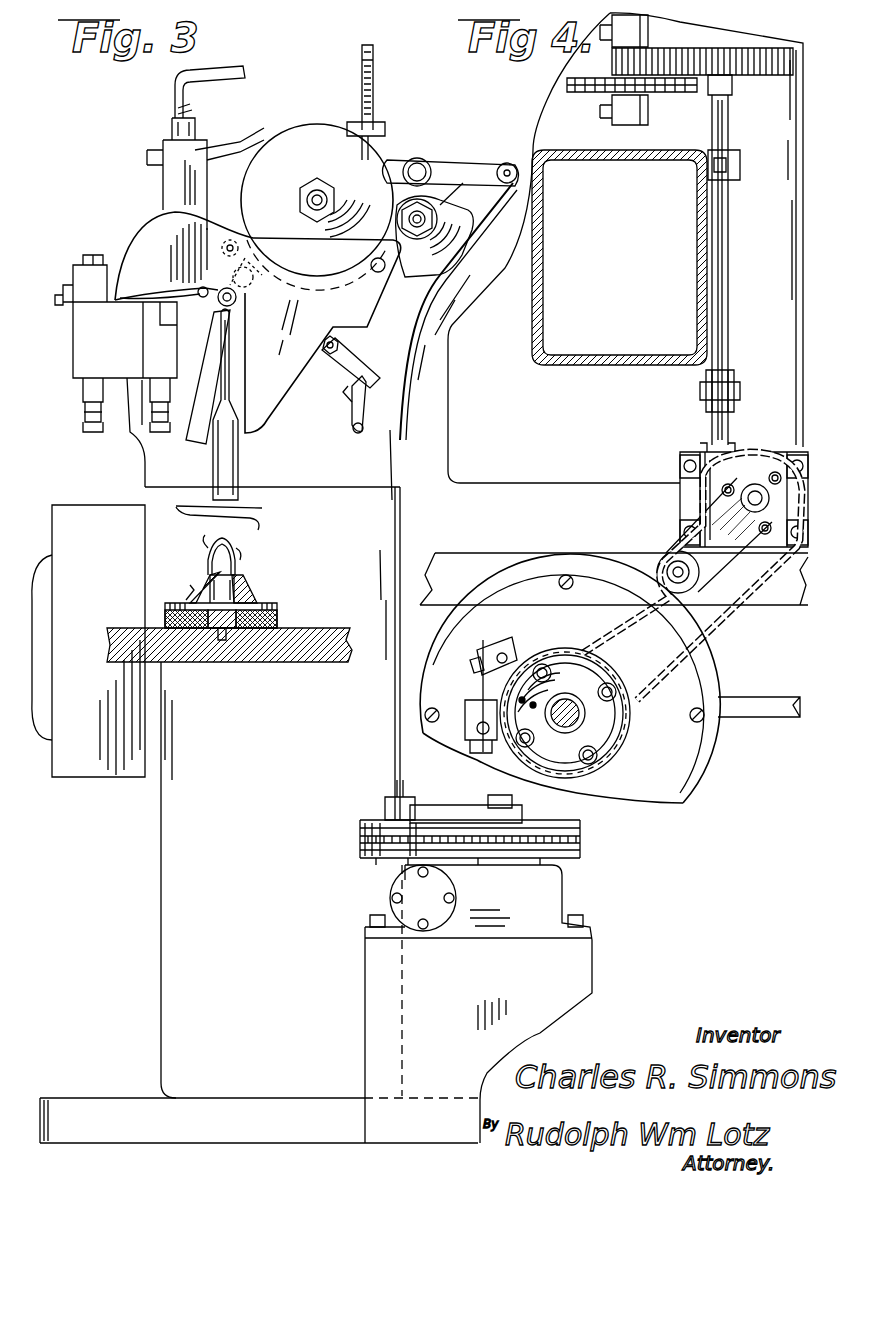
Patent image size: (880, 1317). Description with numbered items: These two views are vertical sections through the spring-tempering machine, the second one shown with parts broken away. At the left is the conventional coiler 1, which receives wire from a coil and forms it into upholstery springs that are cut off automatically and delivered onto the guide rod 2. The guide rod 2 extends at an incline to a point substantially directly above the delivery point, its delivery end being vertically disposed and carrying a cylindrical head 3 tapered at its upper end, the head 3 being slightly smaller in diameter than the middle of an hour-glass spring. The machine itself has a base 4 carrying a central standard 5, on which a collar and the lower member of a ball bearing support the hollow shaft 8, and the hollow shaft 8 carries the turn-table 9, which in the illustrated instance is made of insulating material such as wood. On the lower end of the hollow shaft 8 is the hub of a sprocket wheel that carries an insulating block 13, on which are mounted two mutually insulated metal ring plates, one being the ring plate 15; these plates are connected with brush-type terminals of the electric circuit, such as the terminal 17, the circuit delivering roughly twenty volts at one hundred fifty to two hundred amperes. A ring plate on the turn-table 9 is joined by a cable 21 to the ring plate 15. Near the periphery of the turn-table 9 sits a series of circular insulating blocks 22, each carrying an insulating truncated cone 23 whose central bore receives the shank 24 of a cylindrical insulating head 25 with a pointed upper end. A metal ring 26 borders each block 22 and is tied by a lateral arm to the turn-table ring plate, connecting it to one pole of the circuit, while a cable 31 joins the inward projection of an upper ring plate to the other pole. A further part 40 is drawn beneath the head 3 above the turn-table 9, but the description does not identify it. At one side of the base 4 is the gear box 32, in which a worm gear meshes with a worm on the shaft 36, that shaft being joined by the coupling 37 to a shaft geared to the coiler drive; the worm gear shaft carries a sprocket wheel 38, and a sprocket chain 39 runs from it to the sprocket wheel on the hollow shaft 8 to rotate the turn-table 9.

In FIG. 3, the coiler 1 is at (155, 440).
In FIG. 3, the guide rod 2 is at (222, 338).
In FIG. 3, the cylindrical head 3 is at (235, 447).
In FIG. 4, the base 4 is at (682, 800).
In FIG. 4, the central standard 5 is at (566, 722).
In FIG. 4, the hollow shaft 8 is at (575, 706).
In FIG. 3, the turn-table 9 is at (345, 648).
In FIG. 4, the insulating block 13 is at (606, 746).
In FIG. 4, the ring plate 15 is at (628, 740).
In FIG. 4, the terminal 17 is at (478, 676).
In FIG. 4, the cable 21 is at (522, 700).
In FIG. 3, the circular insulating block 22 is at (227, 632).
In FIG. 3, the truncated cone 23 is at (205, 590).
In FIG. 3, the shank 24 is at (236, 598).
In FIG. 3, the head 25 is at (238, 548).
In FIG. 3, the metal ring 26 is at (278, 606).
In FIG. 4, the cable 31 is at (533, 705).
In FIG. 4, the gear box 32 is at (706, 505).
In FIG. 4, the shaft 36 is at (742, 481).
In FIG. 4, the coupling 37 is at (736, 396).
In FIG. 4, the sprocket wheel 38 is at (752, 545).
In FIG. 4, the sprocket chain 39 is at (627, 630).
In FIG. 3, the spring 40 is at (264, 507).